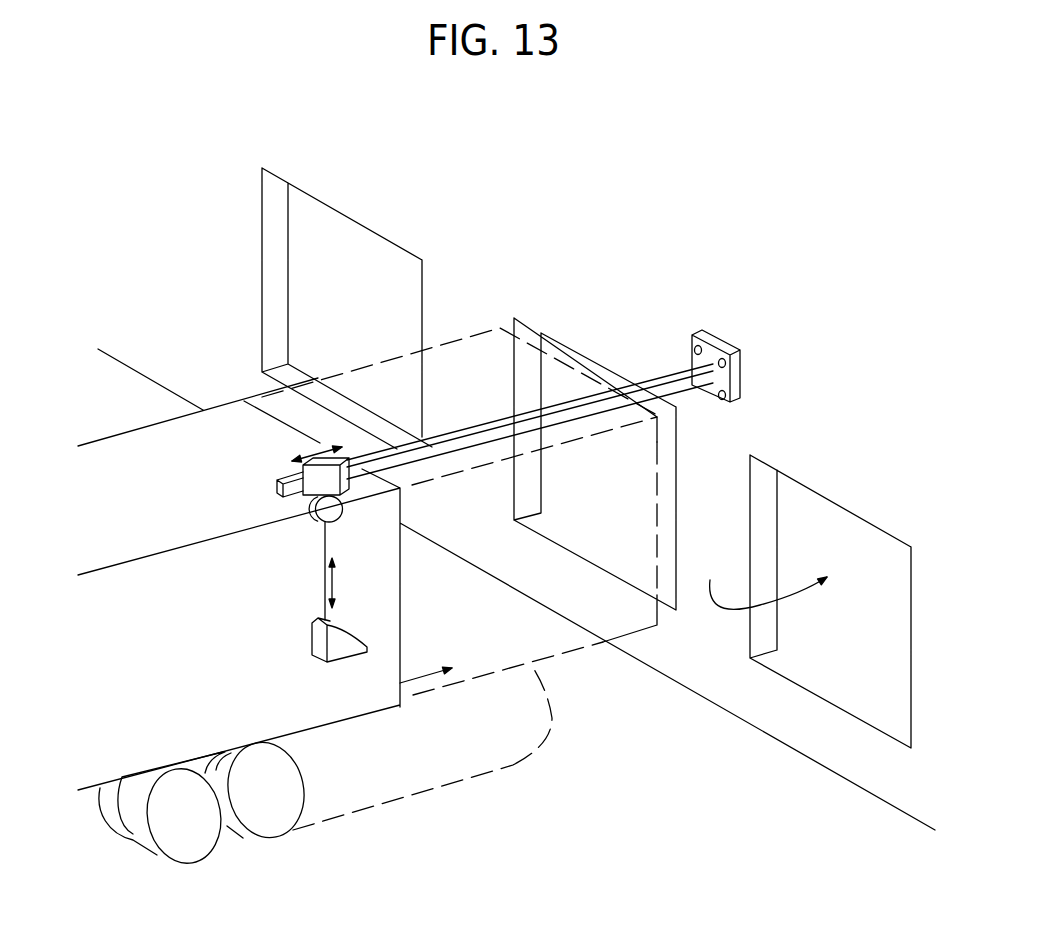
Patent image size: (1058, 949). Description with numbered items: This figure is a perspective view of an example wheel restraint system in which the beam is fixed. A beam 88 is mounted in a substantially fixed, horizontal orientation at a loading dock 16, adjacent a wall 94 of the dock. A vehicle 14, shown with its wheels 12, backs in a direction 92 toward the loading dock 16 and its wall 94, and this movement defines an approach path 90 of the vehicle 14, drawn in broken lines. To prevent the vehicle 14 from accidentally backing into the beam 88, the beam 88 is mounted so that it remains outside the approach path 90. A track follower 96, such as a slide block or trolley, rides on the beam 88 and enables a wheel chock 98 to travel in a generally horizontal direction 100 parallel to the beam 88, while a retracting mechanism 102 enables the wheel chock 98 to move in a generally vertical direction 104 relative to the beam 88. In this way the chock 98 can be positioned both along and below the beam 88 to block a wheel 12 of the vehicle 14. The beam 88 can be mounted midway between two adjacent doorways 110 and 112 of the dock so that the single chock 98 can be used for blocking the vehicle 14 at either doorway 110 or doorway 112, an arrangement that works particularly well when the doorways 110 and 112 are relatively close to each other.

The wheels 12 is at (307, 773).
The vehicle 14 is at (107, 437).
The loading dock 16 is at (618, 711).
The beam 88 is at (487, 420).
The approach path 90 is at (478, 332).
The direction 92 is at (422, 668).
The wall 94 is at (727, 678).
The track follower 96 is at (348, 482).
The wheel chock 98 is at (313, 643).
The horizontal direction 100 is at (312, 452).
The retracting mechanism 102 is at (313, 518).
The vertical direction 104 is at (338, 578).
The doorway 110 is at (630, 459).
The doorway 112 is at (762, 581).